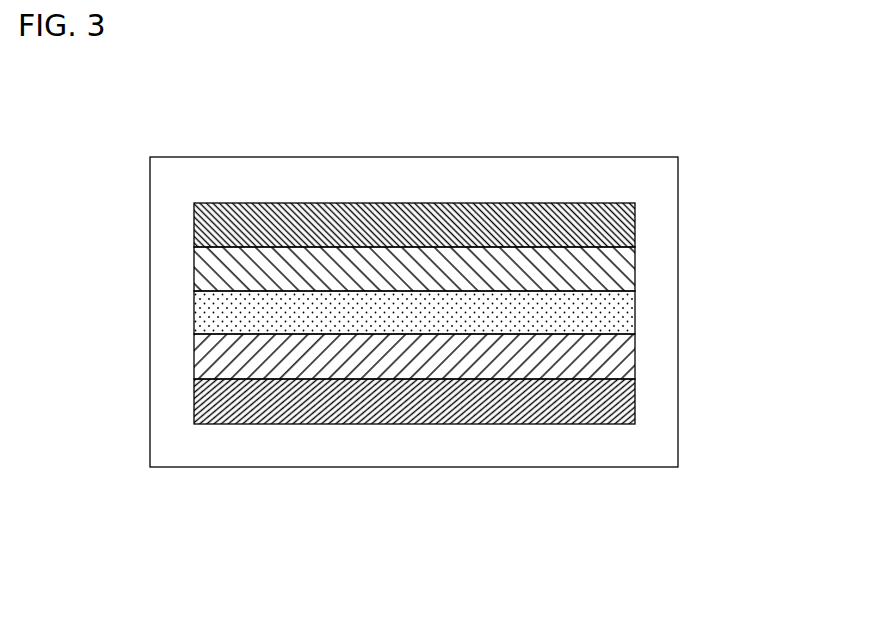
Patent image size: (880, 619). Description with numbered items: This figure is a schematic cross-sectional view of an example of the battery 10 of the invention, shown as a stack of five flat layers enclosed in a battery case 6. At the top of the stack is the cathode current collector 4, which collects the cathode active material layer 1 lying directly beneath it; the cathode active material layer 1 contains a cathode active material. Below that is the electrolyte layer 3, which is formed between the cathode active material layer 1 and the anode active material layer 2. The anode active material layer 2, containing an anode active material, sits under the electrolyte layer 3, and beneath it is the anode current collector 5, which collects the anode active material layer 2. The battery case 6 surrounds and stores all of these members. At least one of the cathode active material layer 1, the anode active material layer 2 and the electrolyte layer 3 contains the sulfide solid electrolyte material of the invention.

The battery 10 is at (664, 114).
The battery case 6 is at (655, 173).
The cathode current collector 4 is at (635, 213).
The cathode active material layer 1 is at (625, 259).
The electrolyte layer 3 is at (622, 303).
The anode active material layer 2 is at (625, 348).
The anode current collector 5 is at (635, 390).